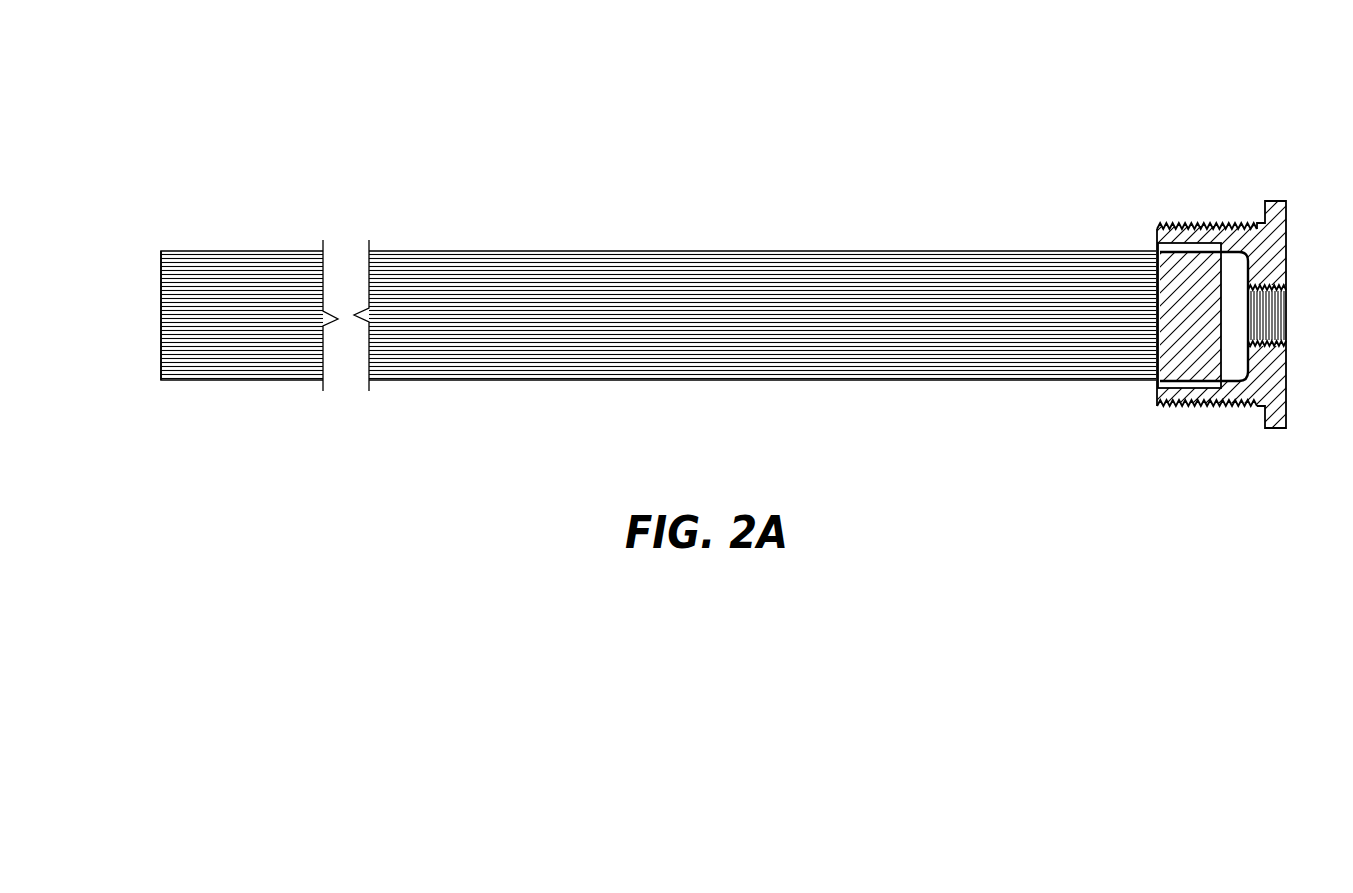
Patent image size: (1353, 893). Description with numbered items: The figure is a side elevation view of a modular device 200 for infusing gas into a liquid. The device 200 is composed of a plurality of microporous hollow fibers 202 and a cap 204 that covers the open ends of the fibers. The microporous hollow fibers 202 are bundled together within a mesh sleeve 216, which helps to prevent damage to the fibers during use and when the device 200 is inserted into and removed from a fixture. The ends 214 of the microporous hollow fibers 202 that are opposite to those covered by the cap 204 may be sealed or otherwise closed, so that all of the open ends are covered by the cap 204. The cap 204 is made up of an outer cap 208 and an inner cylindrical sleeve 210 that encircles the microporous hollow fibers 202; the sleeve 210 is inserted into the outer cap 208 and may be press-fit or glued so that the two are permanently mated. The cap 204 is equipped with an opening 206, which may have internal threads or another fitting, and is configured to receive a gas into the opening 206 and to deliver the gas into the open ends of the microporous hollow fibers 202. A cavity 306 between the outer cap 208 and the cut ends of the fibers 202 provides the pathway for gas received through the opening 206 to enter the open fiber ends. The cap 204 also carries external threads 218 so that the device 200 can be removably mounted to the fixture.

The modular device 200 is at (176, 124).
The microporous hollow fibers 202 is at (610, 243).
The cap 204 is at (1290, 443).
The opening 206 is at (1280, 316).
The outer cap 208 is at (1277, 193).
The inner cylindrical sleeve 210 is at (1200, 214).
The ends of the microporous hollow fibers 214 is at (125, 229).
The mesh sleeve 216 is at (853, 243).
The external threads 218 is at (1171, 214).
The cavity 306 is at (1227, 272).